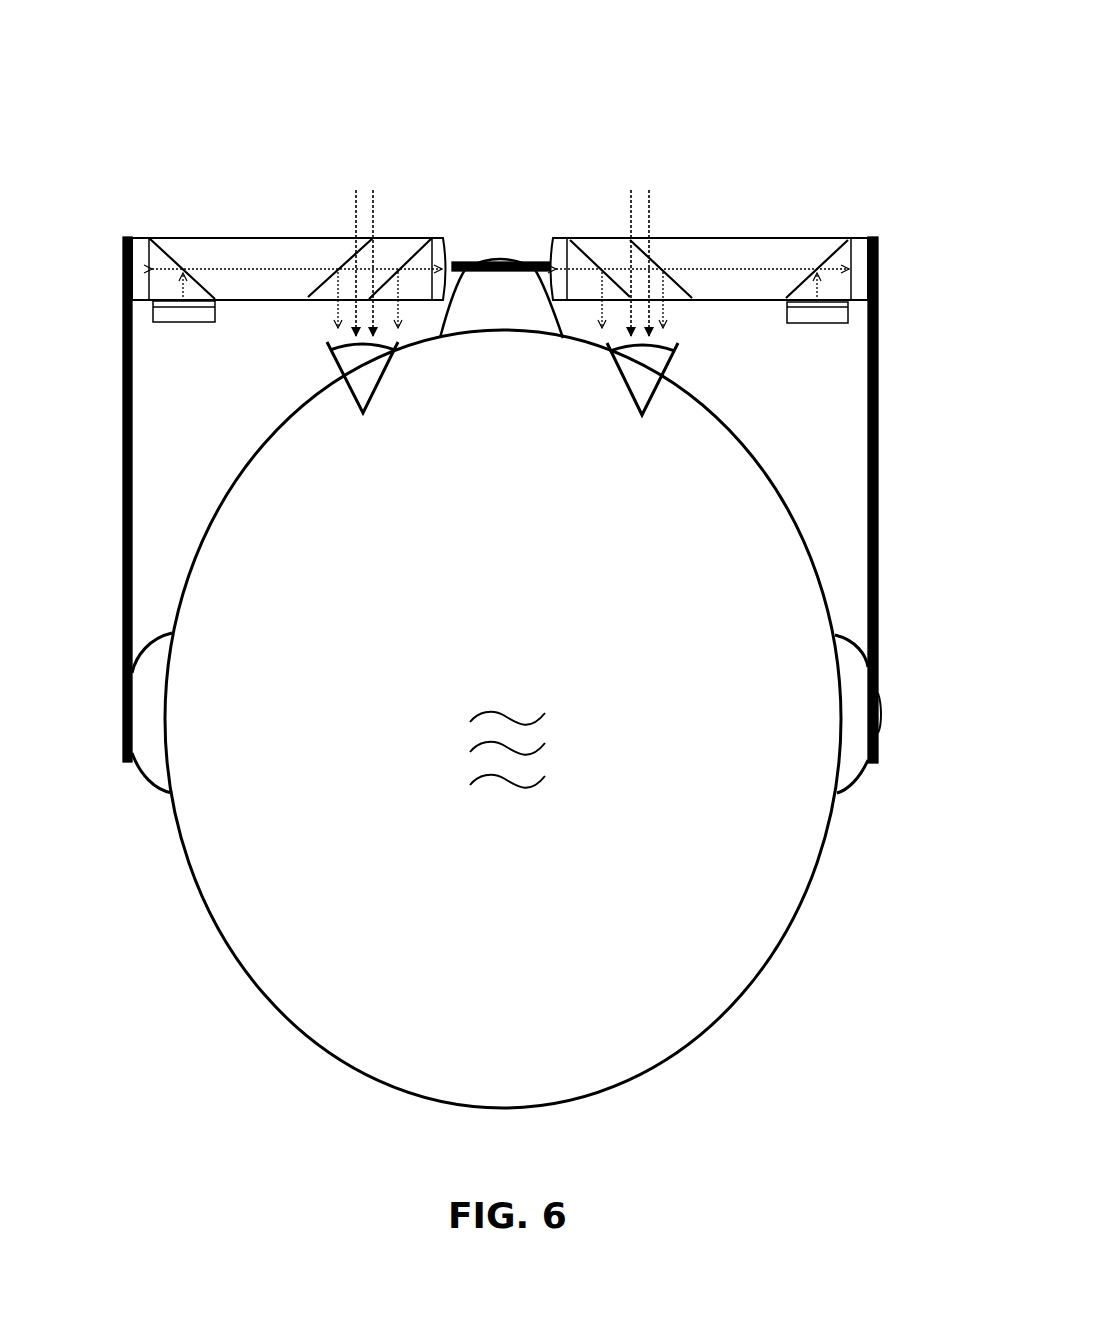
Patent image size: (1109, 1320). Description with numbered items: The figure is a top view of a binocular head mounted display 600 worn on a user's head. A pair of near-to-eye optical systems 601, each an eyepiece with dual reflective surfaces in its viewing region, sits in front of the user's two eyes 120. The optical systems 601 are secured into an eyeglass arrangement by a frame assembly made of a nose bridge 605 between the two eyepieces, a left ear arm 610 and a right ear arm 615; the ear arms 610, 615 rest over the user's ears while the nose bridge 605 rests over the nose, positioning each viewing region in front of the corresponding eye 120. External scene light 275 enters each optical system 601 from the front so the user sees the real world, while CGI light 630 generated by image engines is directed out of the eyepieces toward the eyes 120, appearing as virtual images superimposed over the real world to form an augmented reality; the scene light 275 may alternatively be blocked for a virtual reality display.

The head mounted display 600 is at (790, 77).
The near-to-eye optical system 601 is at (196, 196).
The external scene light 275 is at (354, 194).
The nose bridge 605 is at (532, 260).
The CGI light 630 is at (333, 307).
The eye 120 is at (375, 396).
The left ear arm 610 is at (123, 500).
The right ear arm 615 is at (878, 500).